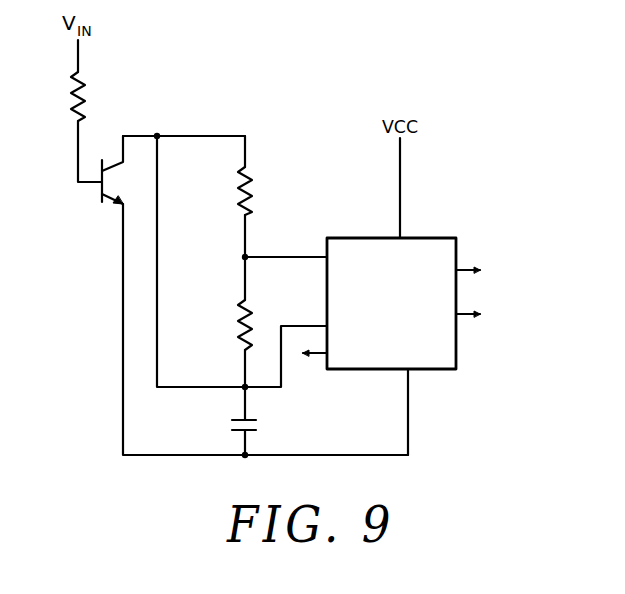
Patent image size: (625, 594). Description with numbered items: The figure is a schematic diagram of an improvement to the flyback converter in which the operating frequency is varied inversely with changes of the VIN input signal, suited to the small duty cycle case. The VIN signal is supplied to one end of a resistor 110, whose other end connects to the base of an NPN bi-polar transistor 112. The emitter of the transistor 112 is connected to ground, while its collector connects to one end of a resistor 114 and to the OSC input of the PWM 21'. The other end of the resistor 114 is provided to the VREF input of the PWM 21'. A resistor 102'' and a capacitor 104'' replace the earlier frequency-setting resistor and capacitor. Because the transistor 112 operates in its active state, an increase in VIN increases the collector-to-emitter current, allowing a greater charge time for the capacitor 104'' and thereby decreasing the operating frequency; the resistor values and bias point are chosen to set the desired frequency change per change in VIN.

The resistor 110 is at (84, 98).
The NPN bi-polar transistor 112 is at (98, 185).
The resistor 114 is at (250, 192).
The resistor 102'' is at (207, 316).
The capacitor 104'' is at (291, 420).
The PWM 21' is at (400, 286).